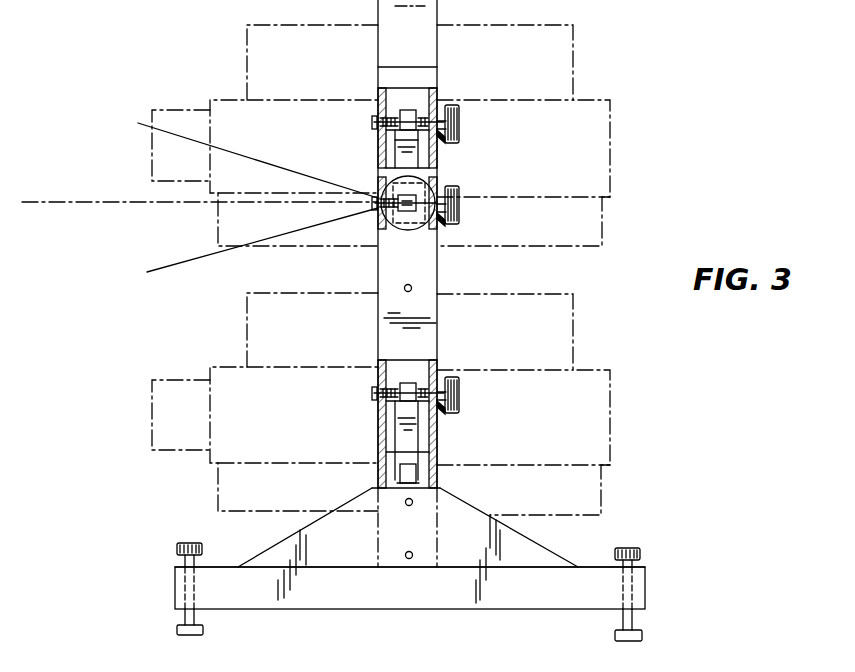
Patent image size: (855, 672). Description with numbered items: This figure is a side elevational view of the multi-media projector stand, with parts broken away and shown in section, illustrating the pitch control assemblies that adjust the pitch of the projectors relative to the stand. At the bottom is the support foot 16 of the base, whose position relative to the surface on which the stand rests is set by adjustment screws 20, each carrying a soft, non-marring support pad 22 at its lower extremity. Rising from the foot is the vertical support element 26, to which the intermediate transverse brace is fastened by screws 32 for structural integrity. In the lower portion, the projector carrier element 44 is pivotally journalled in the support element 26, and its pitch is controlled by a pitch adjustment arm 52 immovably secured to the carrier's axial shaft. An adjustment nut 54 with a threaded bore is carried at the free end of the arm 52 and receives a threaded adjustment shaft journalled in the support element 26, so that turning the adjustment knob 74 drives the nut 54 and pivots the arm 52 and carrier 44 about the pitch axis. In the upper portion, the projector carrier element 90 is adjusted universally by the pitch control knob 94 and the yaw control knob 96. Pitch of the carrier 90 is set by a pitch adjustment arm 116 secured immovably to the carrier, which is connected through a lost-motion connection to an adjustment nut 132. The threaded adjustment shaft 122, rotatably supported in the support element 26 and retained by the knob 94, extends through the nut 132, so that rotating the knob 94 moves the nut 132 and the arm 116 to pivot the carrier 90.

The support foot 16 is at (380, 604).
The adjustment screw 20 is at (632, 548).
The support pad 22 is at (643, 636).
The vertical support element 26 is at (386, 322).
The screw 32 is at (406, 284).
The projector carrier element 44 is at (430, 466).
The pitch adjustment arm 52 is at (397, 424).
The adjustment nut 54 is at (410, 384).
The adjustment knob 74 is at (461, 401).
The projector carrier element 90 is at (422, 229).
The pitch control knob 94 is at (460, 125).
The yaw control knob 96 is at (460, 214).
The pitch adjustment arm 116 is at (437, 162).
The threaded adjustment shaft 122 is at (379, 108).
The adjustment nut 132 is at (407, 141).